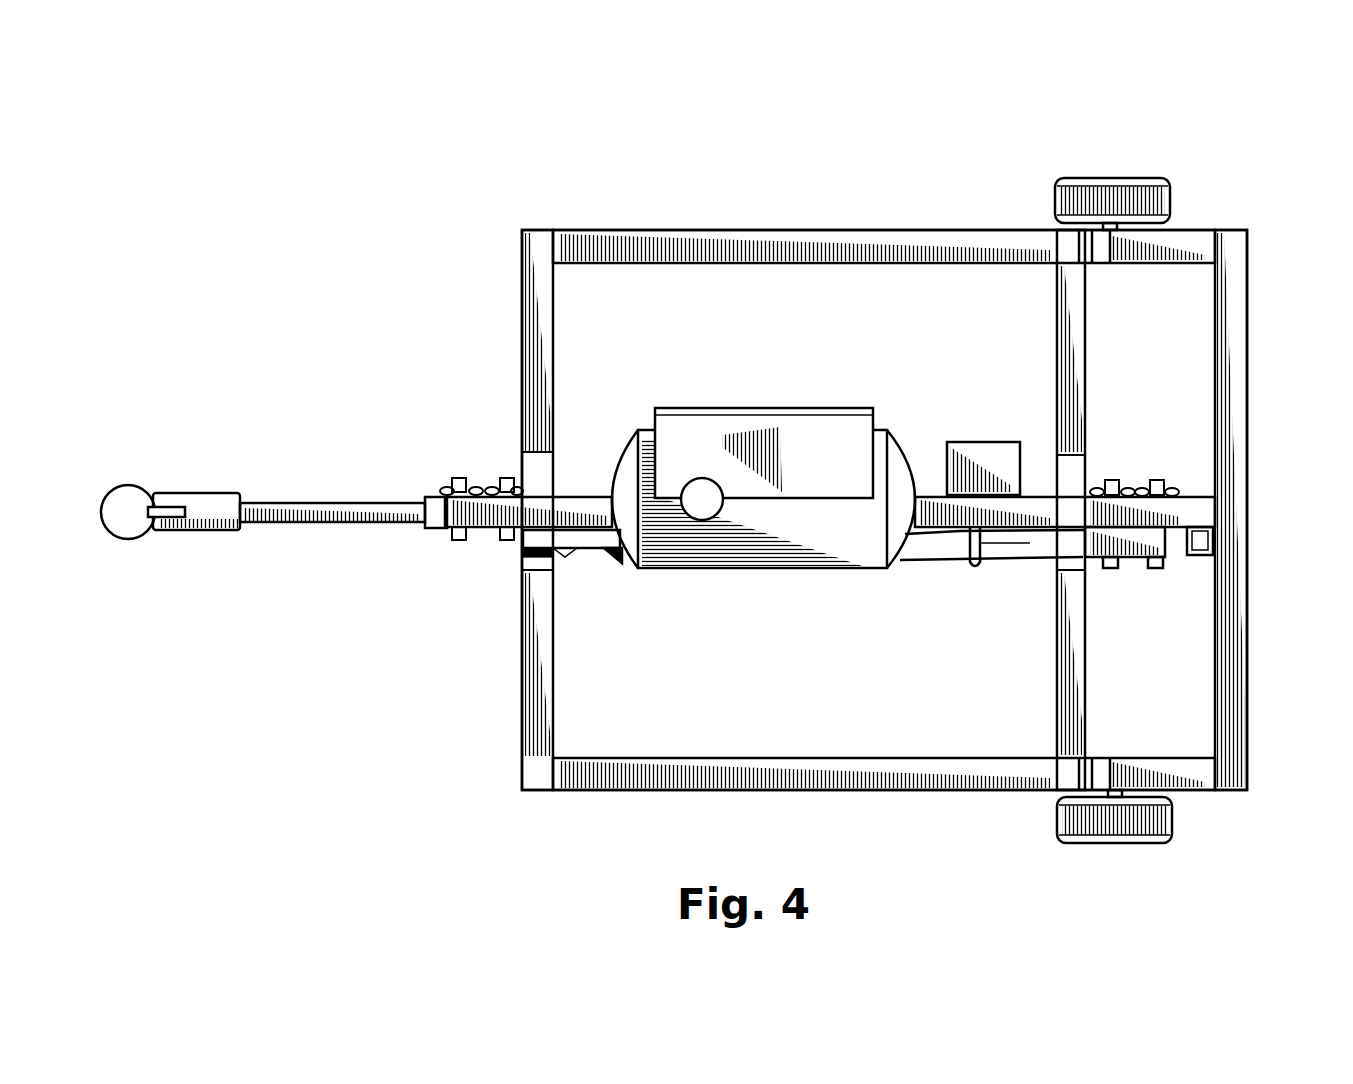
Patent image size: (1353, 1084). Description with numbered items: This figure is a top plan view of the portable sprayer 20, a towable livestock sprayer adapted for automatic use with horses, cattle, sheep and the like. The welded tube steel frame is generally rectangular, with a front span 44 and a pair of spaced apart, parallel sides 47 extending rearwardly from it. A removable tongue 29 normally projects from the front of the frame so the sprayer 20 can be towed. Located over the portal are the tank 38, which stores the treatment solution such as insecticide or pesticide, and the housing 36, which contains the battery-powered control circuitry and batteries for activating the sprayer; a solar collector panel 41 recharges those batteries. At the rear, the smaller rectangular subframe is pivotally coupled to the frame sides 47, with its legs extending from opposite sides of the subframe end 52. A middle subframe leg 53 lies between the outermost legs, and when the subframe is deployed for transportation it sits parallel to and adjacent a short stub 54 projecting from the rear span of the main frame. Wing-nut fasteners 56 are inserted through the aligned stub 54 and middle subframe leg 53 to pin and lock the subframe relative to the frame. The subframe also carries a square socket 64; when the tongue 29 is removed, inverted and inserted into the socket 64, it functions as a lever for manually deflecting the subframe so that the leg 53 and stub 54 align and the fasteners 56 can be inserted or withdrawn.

The portable sprayer 20 is at (806, 158).
The removable tongue 29 is at (315, 522).
The housing 36 is at (998, 458).
The tank 38 is at (838, 553).
The solar collector panel 41 is at (762, 435).
The front span 44 is at (527, 322).
The sides 47 is at (760, 250).
The subframe end 52 is at (1238, 390).
The middle subframe leg 53 is at (1183, 520).
The stub 54 is at (1130, 550).
The fasteners 56 is at (508, 478).
The square socket 64 is at (1198, 556).